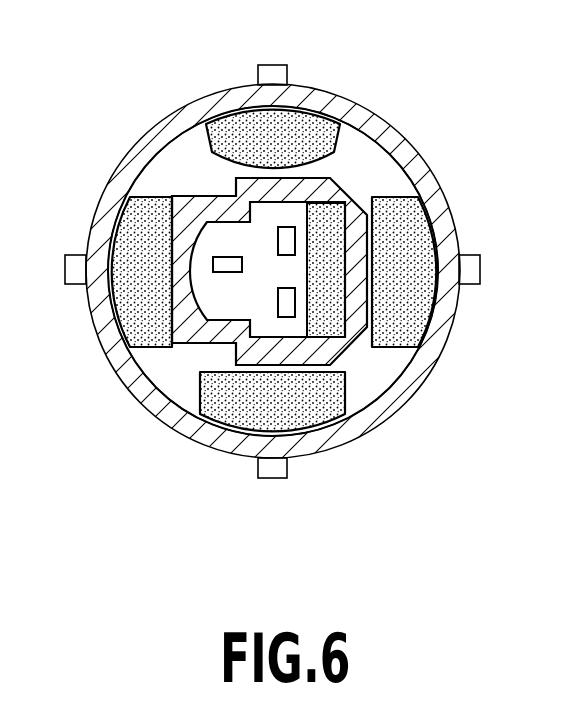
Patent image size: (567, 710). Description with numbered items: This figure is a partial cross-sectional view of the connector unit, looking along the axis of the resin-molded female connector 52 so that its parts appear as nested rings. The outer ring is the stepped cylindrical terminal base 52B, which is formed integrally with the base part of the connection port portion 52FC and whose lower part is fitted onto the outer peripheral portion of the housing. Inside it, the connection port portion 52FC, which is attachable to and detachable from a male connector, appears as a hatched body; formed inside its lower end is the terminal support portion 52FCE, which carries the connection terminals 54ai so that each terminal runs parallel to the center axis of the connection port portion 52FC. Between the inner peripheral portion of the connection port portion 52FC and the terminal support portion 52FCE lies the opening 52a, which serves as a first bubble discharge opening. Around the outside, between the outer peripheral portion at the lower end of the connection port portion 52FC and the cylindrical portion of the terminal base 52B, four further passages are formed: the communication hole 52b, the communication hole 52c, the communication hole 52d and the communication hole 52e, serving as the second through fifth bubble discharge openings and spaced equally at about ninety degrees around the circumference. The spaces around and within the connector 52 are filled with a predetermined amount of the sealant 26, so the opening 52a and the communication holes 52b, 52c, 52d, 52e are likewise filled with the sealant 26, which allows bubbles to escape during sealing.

The female connector 52 is at (375, 131).
The terminal base 52B is at (153, 123).
The sealant 26 is at (293, 117).
The connection port portion 52FC is at (190, 336).
The terminal support portion 52FCE is at (297, 330).
The opening 52a is at (290, 235).
The communication hole 52b is at (418, 306).
The communication hole 52c is at (230, 118).
The communication hole 52d is at (135, 224).
The communication hole 52e is at (228, 380).
The connection terminals 54ai is at (227, 257).